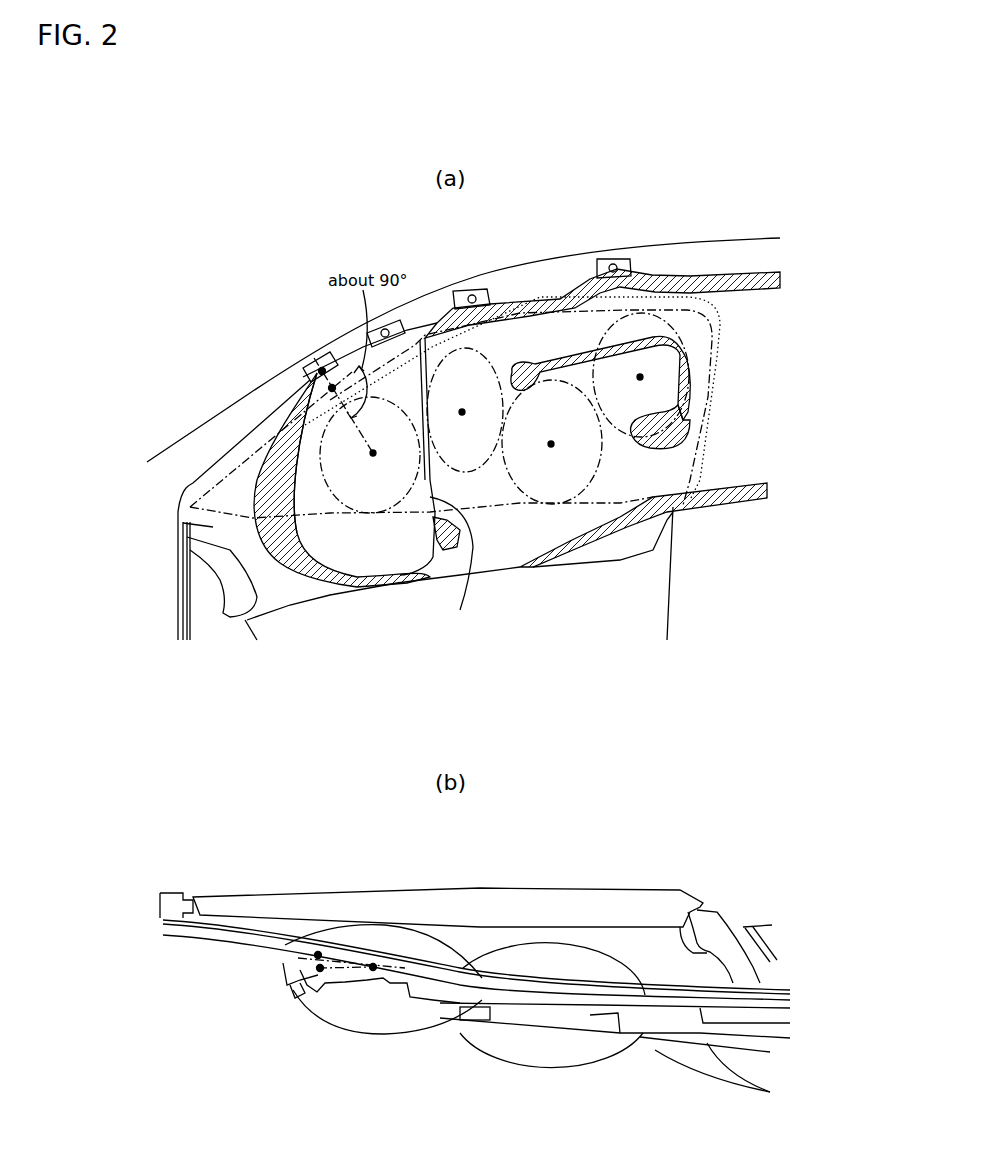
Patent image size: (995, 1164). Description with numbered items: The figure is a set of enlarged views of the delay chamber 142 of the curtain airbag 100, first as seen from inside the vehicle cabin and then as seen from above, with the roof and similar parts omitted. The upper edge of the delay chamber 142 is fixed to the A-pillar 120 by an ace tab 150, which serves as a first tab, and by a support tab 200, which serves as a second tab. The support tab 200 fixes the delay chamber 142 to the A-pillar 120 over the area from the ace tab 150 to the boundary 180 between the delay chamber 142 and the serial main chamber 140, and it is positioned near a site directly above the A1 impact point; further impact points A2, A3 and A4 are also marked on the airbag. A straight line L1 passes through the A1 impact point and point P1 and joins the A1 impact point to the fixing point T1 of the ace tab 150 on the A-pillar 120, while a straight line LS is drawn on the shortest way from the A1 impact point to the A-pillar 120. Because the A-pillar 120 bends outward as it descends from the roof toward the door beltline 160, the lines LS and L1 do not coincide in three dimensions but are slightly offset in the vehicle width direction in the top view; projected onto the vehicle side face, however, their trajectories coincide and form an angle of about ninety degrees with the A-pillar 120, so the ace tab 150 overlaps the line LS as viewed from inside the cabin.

The curtain airbag 100 is at (307, 632).
The A-pillar 120 is at (167, 447).
The main chamber 140 is at (503, 560).
The delay chamber 142 is at (260, 430).
The ace tab 150 is at (317, 367).
The door beltline 160 is at (232, 527).
The boundary 180 is at (460, 610).
The support tab 200 is at (390, 320).
The A1 impact point A1 is at (368, 1043).
The A2 impact point A2 is at (552, 442).
The A3 impact point A3 is at (465, 410).
The A4 impact point A4 is at (641, 375).
The point P1 is at (332, 388).
The fixing point T1 is at (322, 371).
The straight line LS is at (318, 362).
The straight line L1 is at (353, 983).